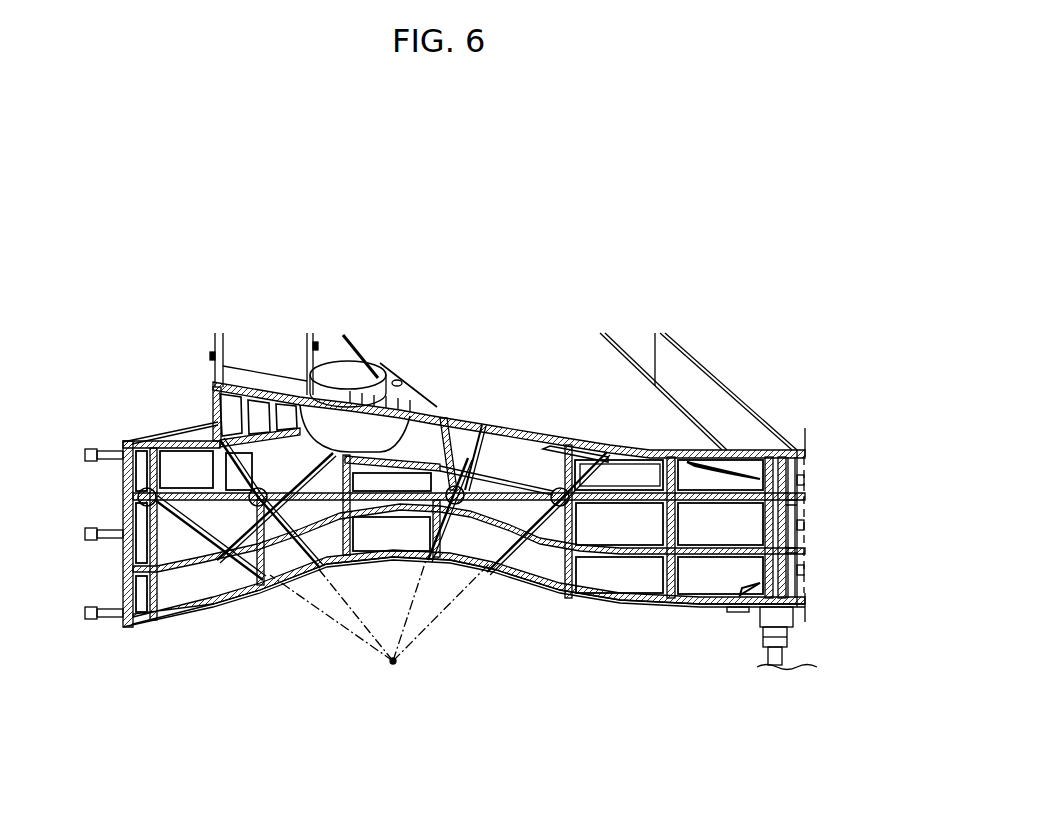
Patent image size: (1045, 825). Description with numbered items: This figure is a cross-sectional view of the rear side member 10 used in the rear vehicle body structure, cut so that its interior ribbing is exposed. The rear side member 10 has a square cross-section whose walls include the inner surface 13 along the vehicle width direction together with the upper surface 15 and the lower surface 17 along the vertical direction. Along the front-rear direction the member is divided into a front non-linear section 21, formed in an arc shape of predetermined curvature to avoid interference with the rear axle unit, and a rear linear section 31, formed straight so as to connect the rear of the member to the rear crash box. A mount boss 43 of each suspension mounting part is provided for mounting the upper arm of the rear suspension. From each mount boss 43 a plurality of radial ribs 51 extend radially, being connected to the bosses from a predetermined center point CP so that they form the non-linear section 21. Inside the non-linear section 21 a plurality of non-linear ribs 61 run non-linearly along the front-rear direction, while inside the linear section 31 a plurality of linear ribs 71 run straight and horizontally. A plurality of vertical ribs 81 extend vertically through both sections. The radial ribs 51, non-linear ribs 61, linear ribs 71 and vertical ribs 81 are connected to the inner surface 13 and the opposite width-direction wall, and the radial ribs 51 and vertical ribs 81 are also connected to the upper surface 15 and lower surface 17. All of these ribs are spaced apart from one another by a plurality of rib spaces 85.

The rear side member 10 is at (477, 224).
The inner surface 13 is at (630, 473).
The upper surface 15 is at (610, 443).
The lower surface 17 is at (617, 603).
The non-linear section 21 is at (398, 565).
The linear section 31 is at (717, 613).
The mount boss 43 is at (203, 432).
The radial ribs 51 is at (257, 563).
The non-linear ribs 61 is at (401, 452).
The linear ribs 71 is at (730, 503).
The vertical ribs 81 is at (267, 463).
The rib spaces 85 is at (213, 522).
The center point CP is at (393, 664).